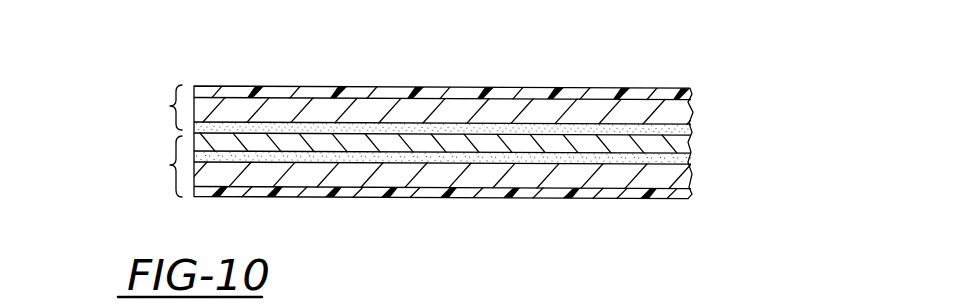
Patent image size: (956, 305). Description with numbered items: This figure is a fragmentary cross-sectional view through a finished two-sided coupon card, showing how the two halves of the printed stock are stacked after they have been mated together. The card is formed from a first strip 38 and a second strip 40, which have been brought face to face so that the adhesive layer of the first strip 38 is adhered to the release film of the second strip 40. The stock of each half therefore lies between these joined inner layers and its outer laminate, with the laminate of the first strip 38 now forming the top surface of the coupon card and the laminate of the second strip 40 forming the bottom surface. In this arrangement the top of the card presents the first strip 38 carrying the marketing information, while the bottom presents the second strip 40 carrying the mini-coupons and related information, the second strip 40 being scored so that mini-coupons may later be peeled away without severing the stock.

The first strip 38 is at (170, 106).
The second strip 40 is at (170, 165).